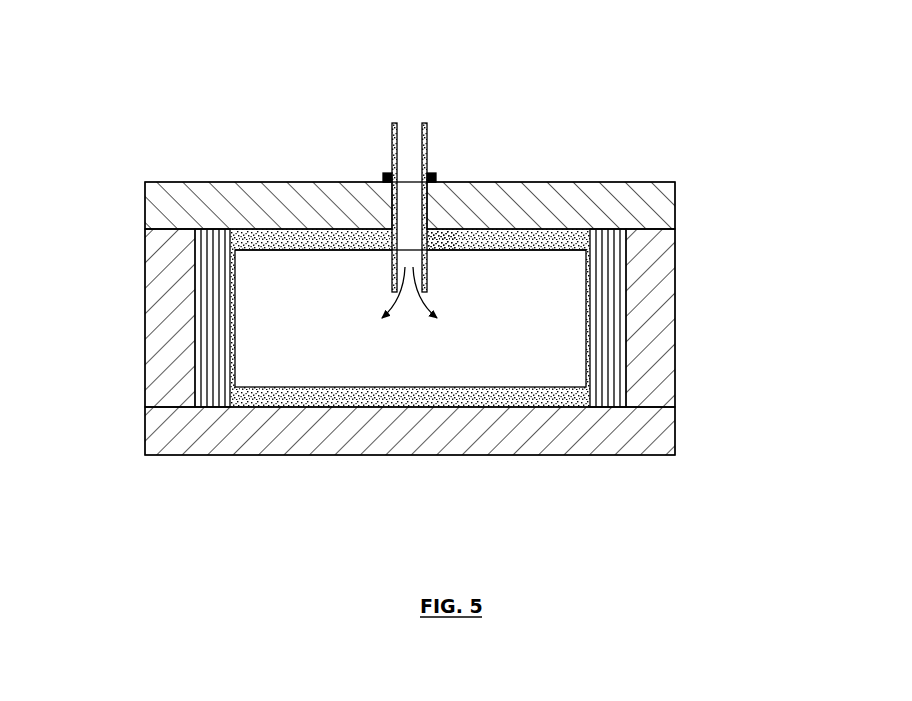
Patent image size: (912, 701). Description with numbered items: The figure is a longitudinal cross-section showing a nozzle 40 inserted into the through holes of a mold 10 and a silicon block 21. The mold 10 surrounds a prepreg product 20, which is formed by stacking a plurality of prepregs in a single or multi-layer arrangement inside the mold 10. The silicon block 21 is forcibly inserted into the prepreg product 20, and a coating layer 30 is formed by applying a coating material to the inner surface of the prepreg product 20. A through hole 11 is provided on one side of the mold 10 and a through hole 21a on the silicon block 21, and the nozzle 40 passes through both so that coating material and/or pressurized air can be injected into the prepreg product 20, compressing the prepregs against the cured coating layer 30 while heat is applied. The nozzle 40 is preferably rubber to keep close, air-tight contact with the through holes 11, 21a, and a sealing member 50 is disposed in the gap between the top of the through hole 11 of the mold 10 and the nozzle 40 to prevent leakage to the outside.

The mold 10 is at (675, 210).
The through hole in mold 11 is at (397, 212).
The prepreg product 20 is at (213, 322).
The silicon block 21 is at (260, 237).
The through hole in silicon block 21a is at (422, 232).
The coating layer 30 is at (302, 388).
The nozzle 40 is at (393, 148).
The sealing member 50 is at (433, 172).